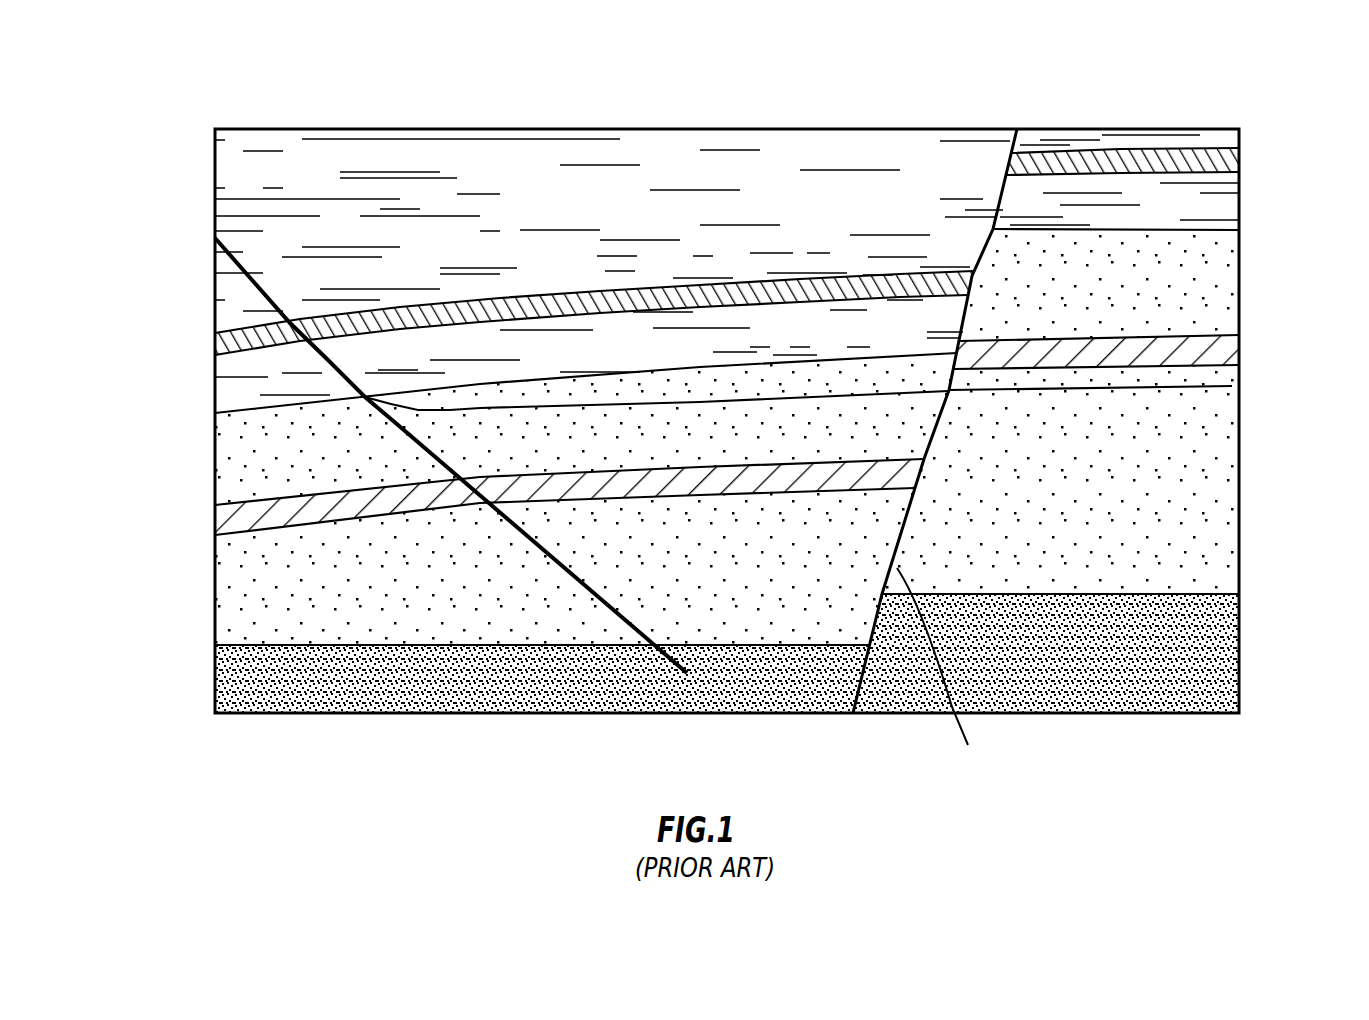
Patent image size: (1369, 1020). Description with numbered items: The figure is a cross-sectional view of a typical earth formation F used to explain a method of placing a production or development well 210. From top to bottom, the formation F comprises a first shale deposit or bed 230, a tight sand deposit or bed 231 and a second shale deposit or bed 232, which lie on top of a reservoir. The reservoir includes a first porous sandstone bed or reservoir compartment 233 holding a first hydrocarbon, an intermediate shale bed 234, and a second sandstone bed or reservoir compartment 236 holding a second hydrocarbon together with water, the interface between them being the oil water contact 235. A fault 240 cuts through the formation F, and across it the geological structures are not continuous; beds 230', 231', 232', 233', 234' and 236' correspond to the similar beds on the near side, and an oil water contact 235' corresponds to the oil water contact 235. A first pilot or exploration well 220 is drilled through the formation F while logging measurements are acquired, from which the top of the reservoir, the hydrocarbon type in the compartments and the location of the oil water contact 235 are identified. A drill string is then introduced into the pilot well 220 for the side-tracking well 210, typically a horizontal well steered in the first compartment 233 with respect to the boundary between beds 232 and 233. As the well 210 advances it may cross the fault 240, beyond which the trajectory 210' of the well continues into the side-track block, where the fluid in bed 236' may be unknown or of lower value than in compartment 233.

The earth formation F is at (1197, 90).
The production or development well 210 is at (657, 416).
The pilot or exploration well 220 is at (345, 387).
The first shale deposit or bed 230 is at (555, 225).
The tight sand deposit or bed 231 is at (537, 313).
The second shale deposit or bed 232 is at (532, 356).
The first porous sandstone bed or reservoir compartment 233 is at (529, 429).
The intermediate shale bed 234 is at (512, 497).
The oil water contact (OWC) 235 is at (485, 669).
The second sandstone bed or reservoir compartment 236 is at (508, 566).
The fault 240 is at (952, 671).
The first shale bed across the fault 230' is at (1187, 146).
The tight sand bed across the fault 231' is at (1180, 168).
The second shale bed across the fault 232' is at (1174, 206).
The first reservoir compartment across the fault 233' is at (1157, 285).
The intermediate shale bed across the fault 234' is at (1154, 333).
The reservoir target line (side-track block) 210' is at (1152, 382).
The second reservoir compartment across the fault 236' is at (1118, 479).
The oil water contact across the fault 235' is at (1104, 649).